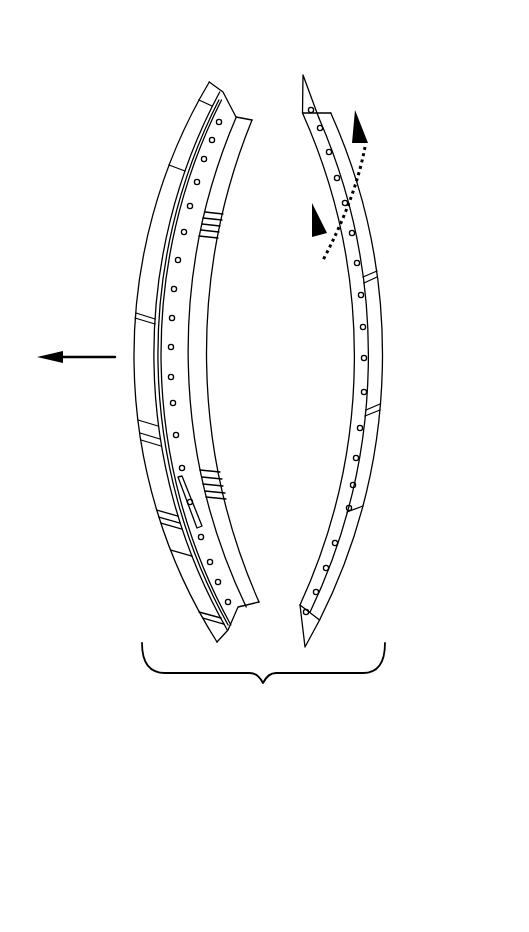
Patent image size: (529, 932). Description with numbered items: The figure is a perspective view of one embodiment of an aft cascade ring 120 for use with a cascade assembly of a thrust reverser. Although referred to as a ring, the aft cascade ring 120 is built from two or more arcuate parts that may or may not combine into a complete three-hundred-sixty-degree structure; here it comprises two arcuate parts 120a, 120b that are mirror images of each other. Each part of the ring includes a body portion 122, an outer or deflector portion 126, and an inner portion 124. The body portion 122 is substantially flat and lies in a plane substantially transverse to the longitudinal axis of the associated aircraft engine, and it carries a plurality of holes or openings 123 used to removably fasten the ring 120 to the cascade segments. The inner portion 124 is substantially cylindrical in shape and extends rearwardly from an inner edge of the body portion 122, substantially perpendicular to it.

The aft cascade ring 120 is at (355, 62).
The arcuate part 120a is at (153, 218).
The arcuate part 120b is at (373, 463).
The body portion 122 is at (175, 455).
The holes or openings 123 is at (330, 122).
The inner portion 124 is at (202, 402).
The outer or deflector portion 126 is at (190, 130).